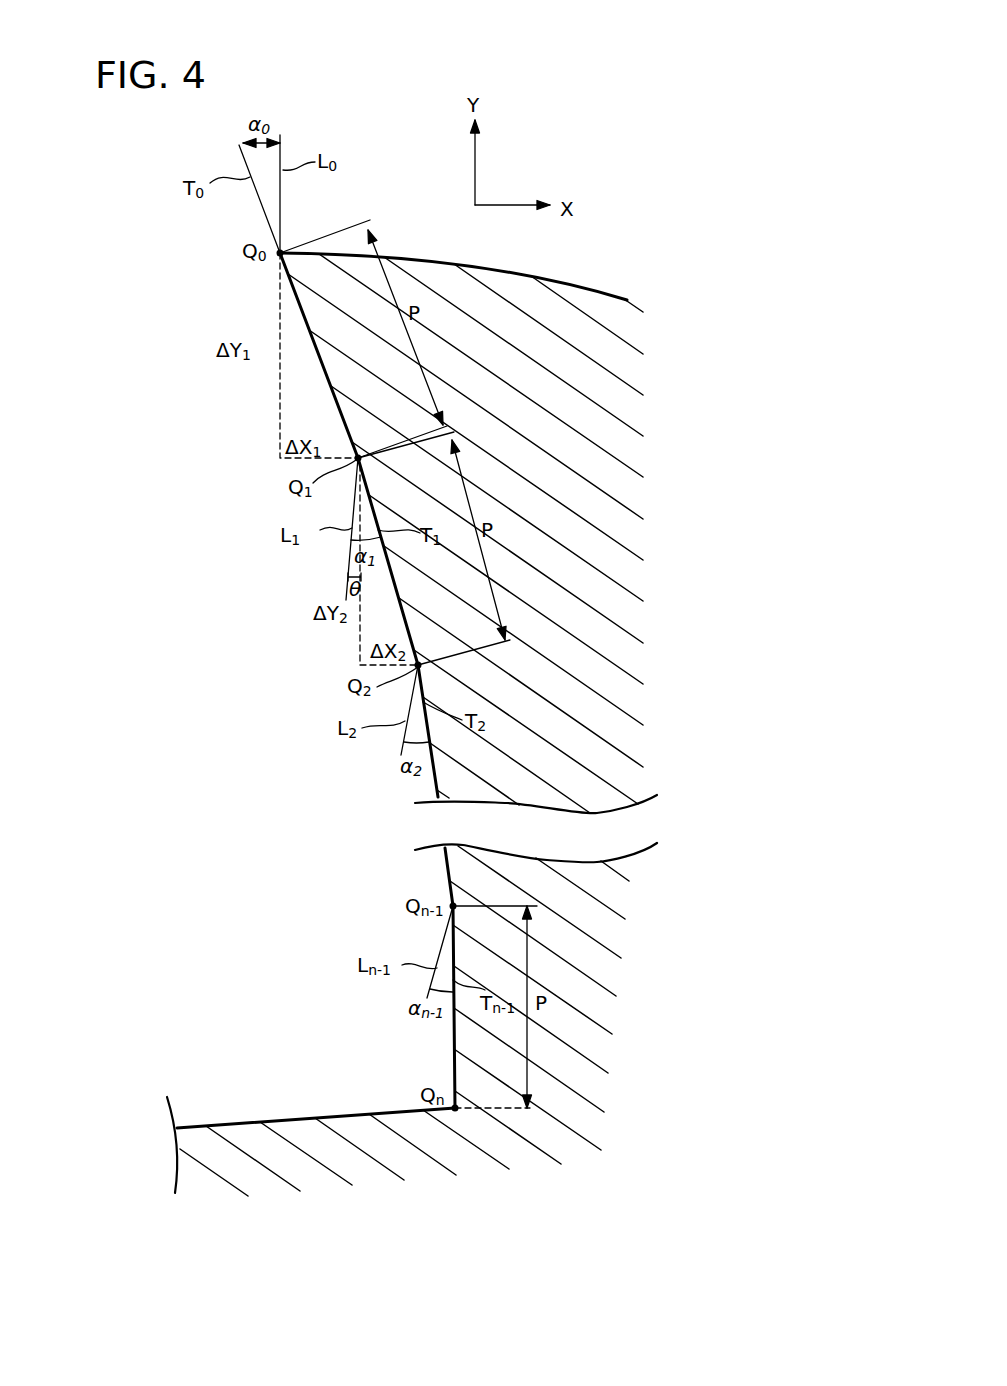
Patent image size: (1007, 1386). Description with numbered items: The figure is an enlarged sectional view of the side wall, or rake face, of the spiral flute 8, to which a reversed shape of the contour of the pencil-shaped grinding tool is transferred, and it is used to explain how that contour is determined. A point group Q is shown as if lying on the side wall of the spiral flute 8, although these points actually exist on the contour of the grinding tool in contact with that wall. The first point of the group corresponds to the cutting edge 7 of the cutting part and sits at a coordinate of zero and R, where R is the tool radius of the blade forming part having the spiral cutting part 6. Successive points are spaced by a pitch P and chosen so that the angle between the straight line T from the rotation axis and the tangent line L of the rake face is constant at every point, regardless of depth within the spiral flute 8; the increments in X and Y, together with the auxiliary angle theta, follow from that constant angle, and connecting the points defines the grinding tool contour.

The spiral cutting part 6 is at (553, 281).
The cutting edge 7 is at (283, 248).
The spiral flute 8 is at (267, 1125).